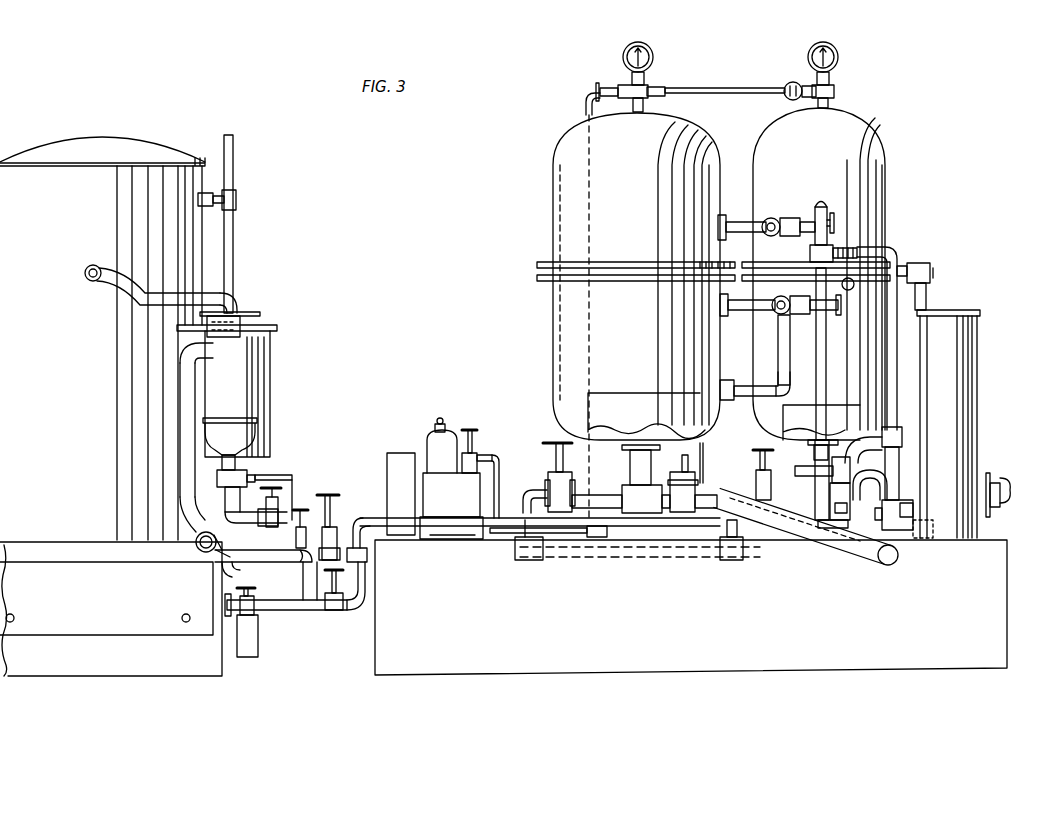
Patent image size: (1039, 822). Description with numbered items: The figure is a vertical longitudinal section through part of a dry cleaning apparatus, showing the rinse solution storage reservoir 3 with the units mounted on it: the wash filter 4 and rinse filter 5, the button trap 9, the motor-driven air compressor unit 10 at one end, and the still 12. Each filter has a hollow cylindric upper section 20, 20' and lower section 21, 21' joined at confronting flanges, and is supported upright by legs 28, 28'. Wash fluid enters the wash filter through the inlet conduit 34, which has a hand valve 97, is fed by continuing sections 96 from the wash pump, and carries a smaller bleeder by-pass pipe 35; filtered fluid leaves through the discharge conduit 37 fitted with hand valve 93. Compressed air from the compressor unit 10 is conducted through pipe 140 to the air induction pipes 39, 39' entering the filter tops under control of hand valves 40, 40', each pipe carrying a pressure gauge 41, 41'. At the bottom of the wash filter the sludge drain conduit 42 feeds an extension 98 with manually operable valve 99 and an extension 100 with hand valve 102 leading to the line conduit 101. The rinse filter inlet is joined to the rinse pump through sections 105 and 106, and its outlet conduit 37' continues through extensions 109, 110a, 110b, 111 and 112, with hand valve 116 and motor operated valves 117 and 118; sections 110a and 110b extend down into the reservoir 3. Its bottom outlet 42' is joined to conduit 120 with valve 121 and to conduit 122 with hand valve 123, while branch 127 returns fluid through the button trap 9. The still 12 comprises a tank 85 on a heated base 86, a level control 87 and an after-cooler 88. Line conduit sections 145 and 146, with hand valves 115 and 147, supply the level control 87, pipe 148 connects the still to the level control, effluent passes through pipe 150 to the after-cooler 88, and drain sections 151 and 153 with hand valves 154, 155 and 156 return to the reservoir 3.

The storage reservoir for the rinse solution 3 is at (691, 607).
The wash solution filter 4 is at (587, 276).
The rinse solution filter 5 is at (860, 274).
The button trap 9 is at (960, 391).
The motor-driven air compressor unit 10 is at (470, 410).
The still 12 is at (253, 210).
The upper section of filter body 20 is at (636, 276).
The upper section of rinse filter body 20' is at (816, 274).
The lower section of filter body 21 is at (605, 282).
The lower section of rinse filter body 21' is at (847, 295).
The legs 28 is at (646, 403).
The legs 28' is at (821, 411).
The inlet conduit 34 is at (752, 397).
The bleeder by-pass pipe 35 is at (735, 311).
The discharge conduit 37 is at (742, 217).
The outlet conduit of rinse filter 37' is at (828, 212).
The air induction pipe 39 is at (645, 84).
The air induction pipe 39' is at (725, 73).
The hand valve 40 is at (595, 79).
The hand valve 40' is at (791, 79).
The pressure gauge 41 is at (638, 51).
The pressure gauge 41' is at (822, 60).
The sludge drain conduit 42 is at (635, 479).
The sludge drain conduit 42' is at (813, 461).
The still tank 85 is at (102, 338).
The still base 86 is at (93, 540).
The level control 87 is at (283, 495).
The after-cooler 88 is at (258, 387).
The hand valve 93 is at (790, 220).
The continuing sections 96 is at (774, 316).
The hand valve 97 is at (797, 316).
The drain extension 98 is at (865, 556).
The manually-operable valve 99 is at (695, 480).
The conduit extension 100 is at (532, 497).
The line conduit 101 is at (625, 560).
The hand valve 102 is at (545, 442).
The joining section 105 is at (918, 265).
The joining section 106 is at (927, 294).
The conduit extension 109 is at (893, 258).
The conduit section 110a is at (897, 456).
The conduit section 110b is at (848, 528).
The conduit extension 111 is at (900, 434).
The conduit extension 112 is at (803, 472).
The hand valve 115 is at (850, 291).
The hand valve 116 is at (843, 248).
The motor operated valve 117 is at (898, 497).
The motor operated valve 118 is at (836, 520).
The conduit 120 is at (950, 525).
The manually operable valve 121 is at (880, 481).
The conduit 122 is at (727, 545).
The hand valve 123 is at (758, 448).
The conduit branch 127 is at (1000, 478).
The compressed air pipe 140 is at (586, 105).
The line conduit section 145 is at (827, 369).
The line conduit section 146 is at (288, 600).
The hand valve 147 is at (372, 578).
The pipe 148 is at (232, 571).
The effluent pipe 150 is at (110, 294).
The drain pipe section 151 is at (256, 514).
The drain pipe section 153 is at (372, 548).
The hand valve 154 is at (273, 472).
The hand valve 155 is at (328, 495).
The hand valve 156 is at (340, 514).